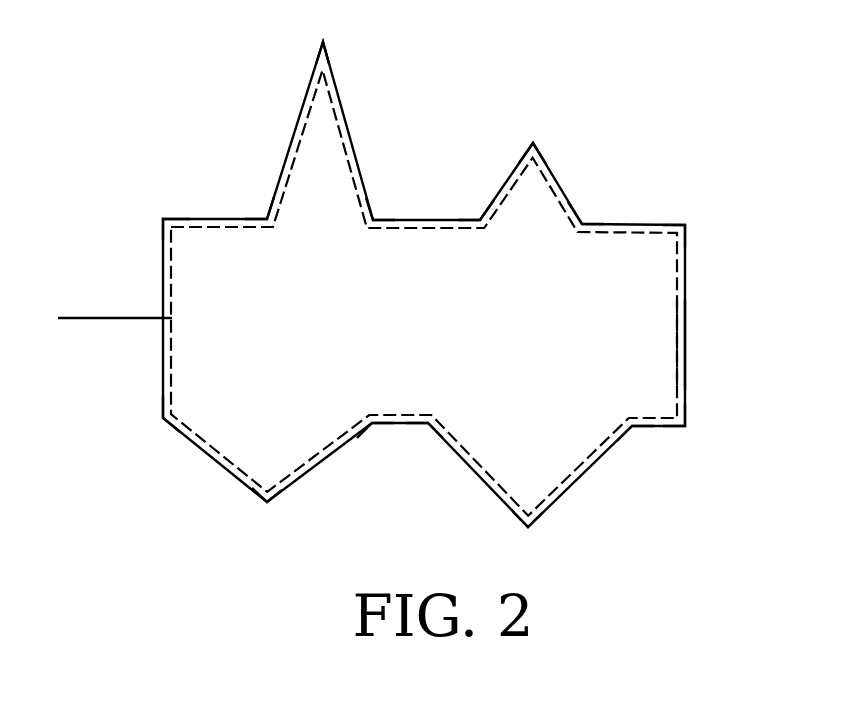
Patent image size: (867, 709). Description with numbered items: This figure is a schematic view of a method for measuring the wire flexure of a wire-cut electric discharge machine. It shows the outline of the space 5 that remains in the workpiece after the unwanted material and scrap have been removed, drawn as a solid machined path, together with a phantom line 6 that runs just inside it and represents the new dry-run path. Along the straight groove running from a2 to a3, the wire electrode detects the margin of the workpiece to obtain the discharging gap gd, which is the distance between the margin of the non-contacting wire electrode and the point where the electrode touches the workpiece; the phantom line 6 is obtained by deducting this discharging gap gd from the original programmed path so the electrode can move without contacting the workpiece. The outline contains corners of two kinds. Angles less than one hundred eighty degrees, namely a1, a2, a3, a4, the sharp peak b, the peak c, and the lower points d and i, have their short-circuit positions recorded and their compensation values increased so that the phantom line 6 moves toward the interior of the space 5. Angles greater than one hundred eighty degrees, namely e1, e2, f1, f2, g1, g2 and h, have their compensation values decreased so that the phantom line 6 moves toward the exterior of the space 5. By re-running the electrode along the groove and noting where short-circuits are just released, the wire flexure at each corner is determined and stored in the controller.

The space 5 is at (415, 284).
The phantom line 6 is at (343, 140).
The discharging gap gd is at (637, 345).
The angle a1 is at (165, 207).
The angle a2 is at (692, 220).
The angle a3 is at (694, 428).
The angle a4 is at (540, 535).
The angle b is at (335, 48).
The angle c is at (531, 130).
The angle d is at (272, 512).
The angle e1 is at (253, 198).
The angle e2 is at (387, 198).
The angle f1 is at (470, 201).
The angle f2 is at (594, 201).
The angle g1 is at (638, 434).
The angle g2 is at (423, 444).
The angle h is at (375, 448).
The angle i is at (162, 431).